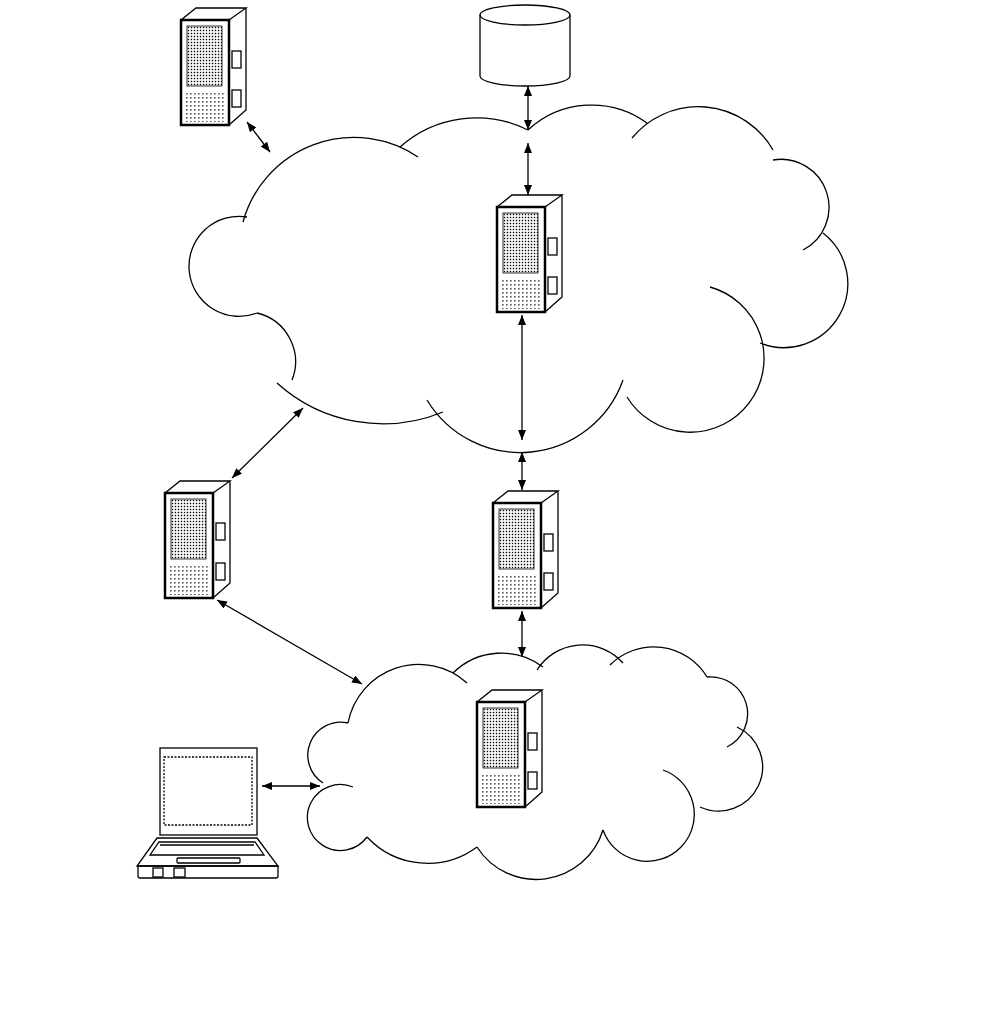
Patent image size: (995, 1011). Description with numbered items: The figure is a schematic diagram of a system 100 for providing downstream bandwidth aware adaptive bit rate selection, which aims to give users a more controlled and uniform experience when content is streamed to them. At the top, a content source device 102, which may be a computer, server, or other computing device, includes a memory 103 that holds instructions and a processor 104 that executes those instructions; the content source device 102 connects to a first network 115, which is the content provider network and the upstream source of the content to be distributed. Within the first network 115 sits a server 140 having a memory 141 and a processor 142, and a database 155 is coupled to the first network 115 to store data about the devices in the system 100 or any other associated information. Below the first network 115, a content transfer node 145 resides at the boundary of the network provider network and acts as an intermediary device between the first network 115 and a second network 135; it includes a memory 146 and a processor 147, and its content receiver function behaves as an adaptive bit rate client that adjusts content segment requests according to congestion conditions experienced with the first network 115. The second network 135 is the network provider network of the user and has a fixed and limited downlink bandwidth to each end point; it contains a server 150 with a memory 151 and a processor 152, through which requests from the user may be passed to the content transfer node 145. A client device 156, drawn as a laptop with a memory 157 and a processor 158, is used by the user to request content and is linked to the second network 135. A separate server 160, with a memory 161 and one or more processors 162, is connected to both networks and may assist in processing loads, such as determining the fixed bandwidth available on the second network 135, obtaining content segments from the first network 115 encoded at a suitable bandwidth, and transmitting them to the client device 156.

The system 100 is at (534, 900).
The content source device 102 is at (180, 41).
The memory 103 is at (243, 59).
The processor 104 is at (243, 98).
The first network 115 is at (217, 307).
The second network 135 is at (757, 730).
The server 140 is at (495, 228).
The memory 141 is at (563, 246).
The processor 142 is at (563, 286).
The content transfer node 145 is at (492, 527).
The memory 146 is at (557, 542).
The processor 147 is at (557, 585).
The server 150 is at (545, 706).
The memory 151 is at (545, 738).
The processor 152 is at (545, 780).
The database 155 is at (525, 45).
The client device 156 is at (158, 786).
The memory 157 is at (158, 878).
The processor 158 is at (180, 878).
The server 160 is at (163, 515).
The memory 161 is at (227, 572).
The processors 162 is at (227, 532).